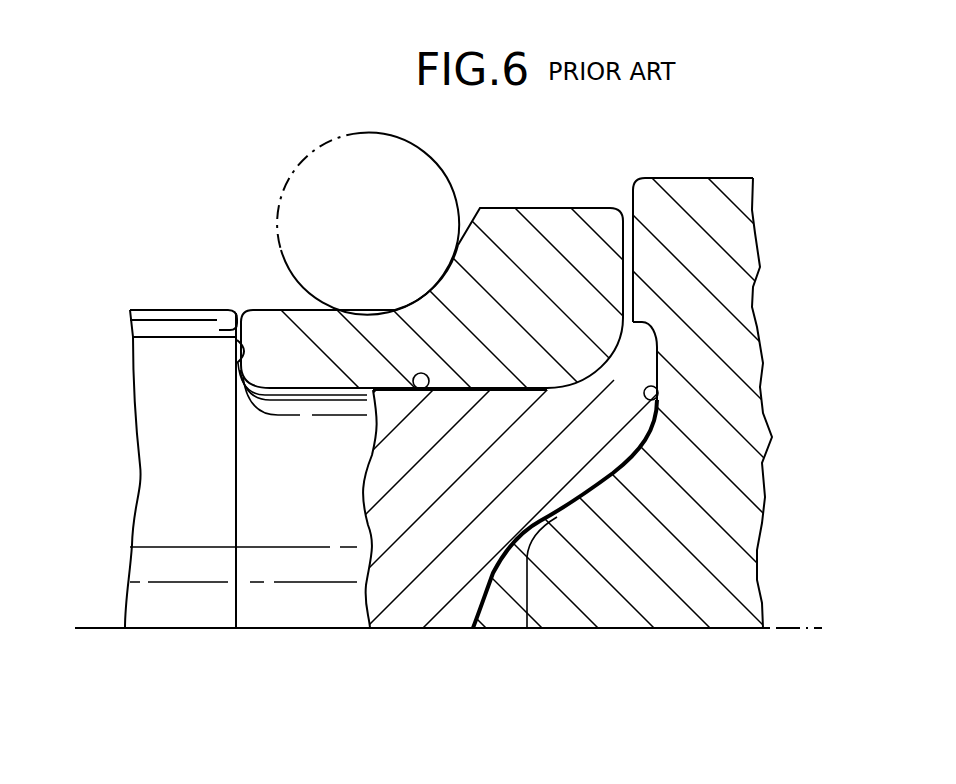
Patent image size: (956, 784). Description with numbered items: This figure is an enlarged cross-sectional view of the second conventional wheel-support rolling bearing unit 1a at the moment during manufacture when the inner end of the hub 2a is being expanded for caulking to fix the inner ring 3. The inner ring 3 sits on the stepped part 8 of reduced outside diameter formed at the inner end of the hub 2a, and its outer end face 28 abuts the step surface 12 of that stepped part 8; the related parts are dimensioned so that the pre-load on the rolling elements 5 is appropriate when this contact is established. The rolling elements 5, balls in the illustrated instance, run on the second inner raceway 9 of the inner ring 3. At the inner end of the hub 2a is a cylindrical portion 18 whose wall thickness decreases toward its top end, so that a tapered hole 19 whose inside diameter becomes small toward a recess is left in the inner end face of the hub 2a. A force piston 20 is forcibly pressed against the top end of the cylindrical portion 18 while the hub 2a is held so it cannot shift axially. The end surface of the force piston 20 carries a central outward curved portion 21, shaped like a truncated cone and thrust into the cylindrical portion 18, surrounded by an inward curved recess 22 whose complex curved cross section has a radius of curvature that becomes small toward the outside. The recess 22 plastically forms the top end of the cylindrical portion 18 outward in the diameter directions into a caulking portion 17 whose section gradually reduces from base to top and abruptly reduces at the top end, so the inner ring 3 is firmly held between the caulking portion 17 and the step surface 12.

The wheel-support rolling bearing unit 1a is at (587, 180).
The hub 2a is at (193, 608).
The inner ring 3 is at (539, 222).
The rolling elements 5 is at (297, 167).
The stepped part 8 is at (410, 392).
The second inner raceway 9 is at (460, 227).
The step surface 12 is at (233, 337).
The caulking portion 17 is at (633, 347).
The cylindrical portion 18 is at (630, 458).
The tapered hole 19 is at (548, 525).
The force piston 20 is at (692, 198).
The outward curved portion 21 is at (697, 612).
The recess 22 is at (659, 385).
The outer end face 28 is at (222, 325).